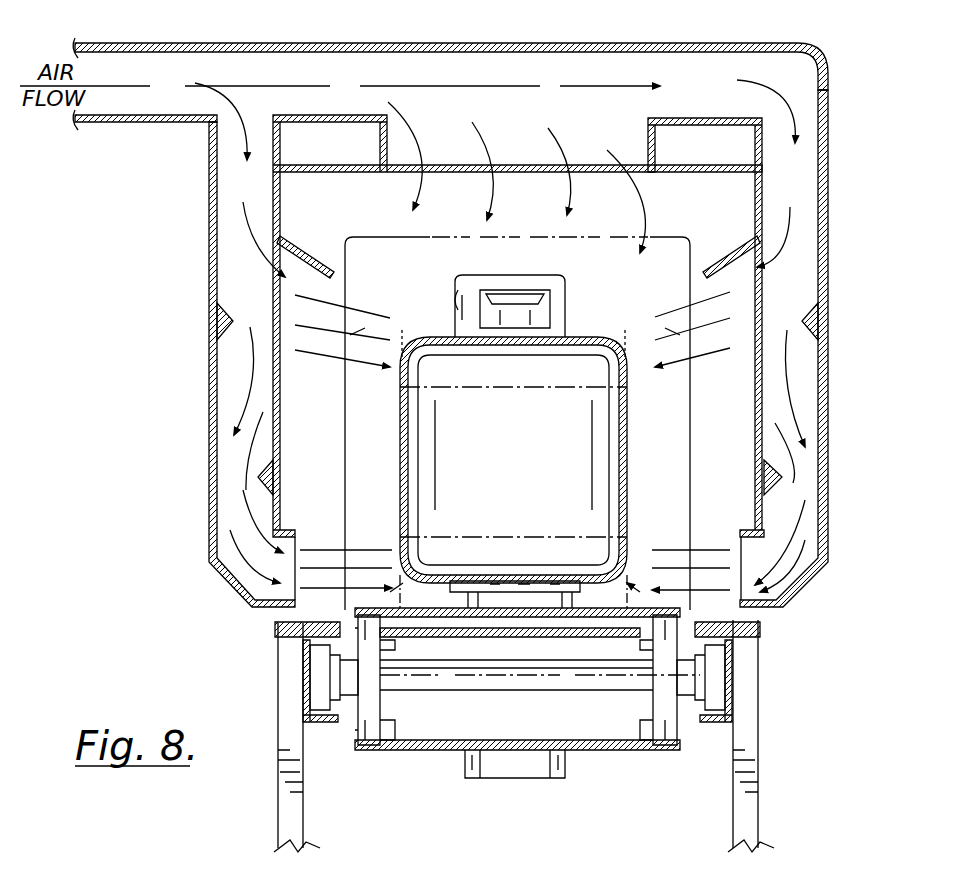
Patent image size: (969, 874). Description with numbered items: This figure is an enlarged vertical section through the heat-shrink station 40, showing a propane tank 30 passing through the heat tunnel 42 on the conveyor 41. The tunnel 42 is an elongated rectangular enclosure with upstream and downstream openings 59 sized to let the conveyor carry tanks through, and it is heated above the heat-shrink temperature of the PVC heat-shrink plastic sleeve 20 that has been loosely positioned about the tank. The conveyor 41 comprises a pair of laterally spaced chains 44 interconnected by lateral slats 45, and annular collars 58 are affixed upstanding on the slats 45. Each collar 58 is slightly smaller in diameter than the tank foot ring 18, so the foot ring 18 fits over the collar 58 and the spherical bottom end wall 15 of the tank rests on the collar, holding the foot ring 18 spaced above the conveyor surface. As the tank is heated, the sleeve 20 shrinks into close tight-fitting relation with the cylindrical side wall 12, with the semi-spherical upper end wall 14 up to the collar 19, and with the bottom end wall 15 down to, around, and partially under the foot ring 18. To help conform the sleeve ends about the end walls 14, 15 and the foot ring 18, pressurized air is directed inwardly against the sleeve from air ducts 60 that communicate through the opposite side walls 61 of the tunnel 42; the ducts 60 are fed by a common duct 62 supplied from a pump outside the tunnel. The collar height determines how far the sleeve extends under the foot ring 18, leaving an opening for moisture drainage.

The cylindrical side wall 12 is at (509, 438).
The semi-spherical upper end wall 14 is at (630, 378).
The spherical bottom end wall 15 is at (615, 505).
The foot ring 18 is at (490, 585).
The collar 19 is at (565, 316).
The heat-shrink plastic sleeve 20 is at (400, 460).
The tank 30 is at (442, 490).
The heat-shrink station 40 is at (466, 308).
The conveyor 41 is at (320, 672).
The heat tunnel 42 is at (325, 390).
The chains 44 is at (335, 617).
The lateral slats 45 is at (468, 612).
The annular collars 58 is at (555, 600).
The openings 59 is at (392, 237).
The air ducts 60 is at (235, 245).
The side walls 61 is at (322, 420).
The common duct 62 is at (657, 133).